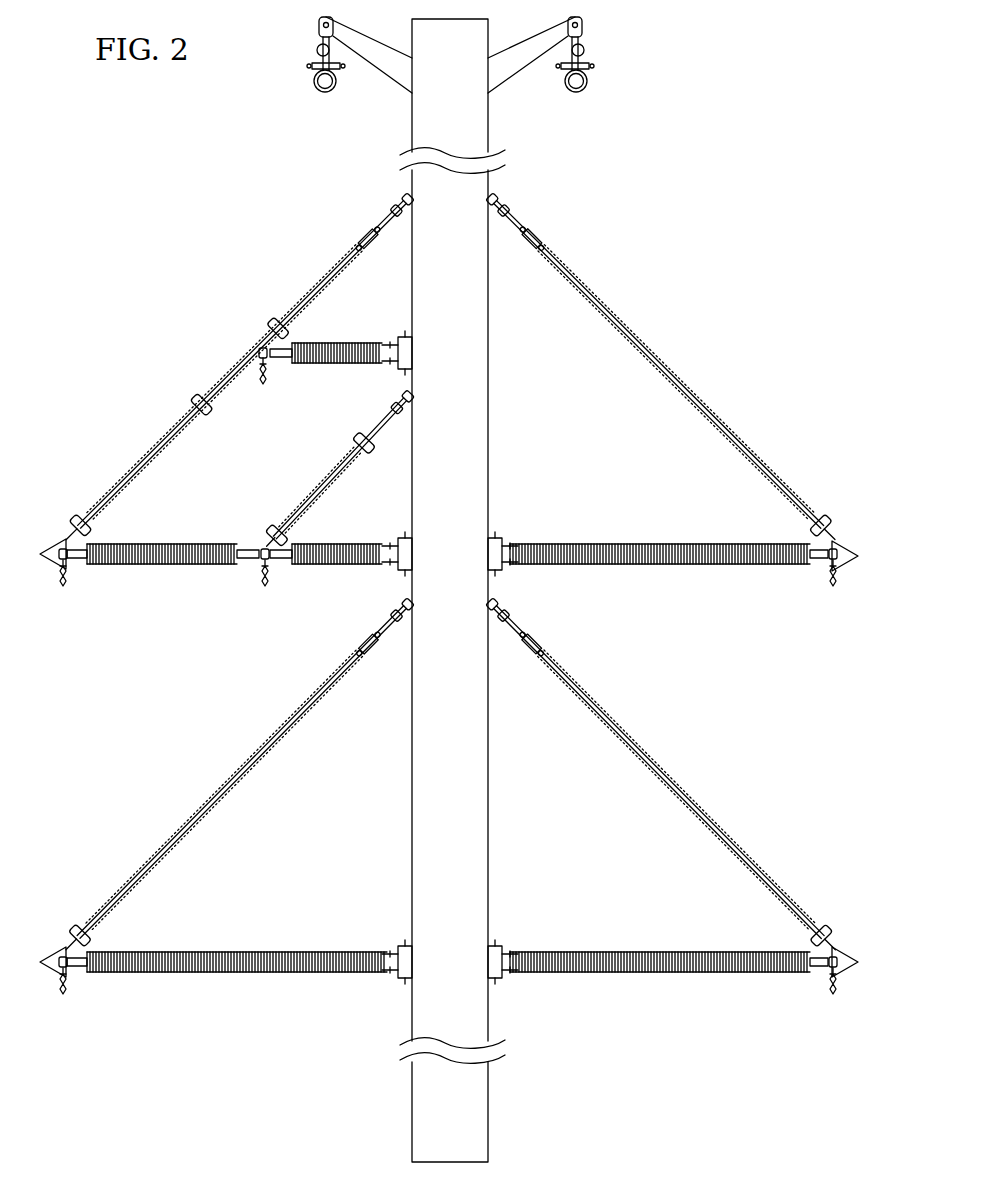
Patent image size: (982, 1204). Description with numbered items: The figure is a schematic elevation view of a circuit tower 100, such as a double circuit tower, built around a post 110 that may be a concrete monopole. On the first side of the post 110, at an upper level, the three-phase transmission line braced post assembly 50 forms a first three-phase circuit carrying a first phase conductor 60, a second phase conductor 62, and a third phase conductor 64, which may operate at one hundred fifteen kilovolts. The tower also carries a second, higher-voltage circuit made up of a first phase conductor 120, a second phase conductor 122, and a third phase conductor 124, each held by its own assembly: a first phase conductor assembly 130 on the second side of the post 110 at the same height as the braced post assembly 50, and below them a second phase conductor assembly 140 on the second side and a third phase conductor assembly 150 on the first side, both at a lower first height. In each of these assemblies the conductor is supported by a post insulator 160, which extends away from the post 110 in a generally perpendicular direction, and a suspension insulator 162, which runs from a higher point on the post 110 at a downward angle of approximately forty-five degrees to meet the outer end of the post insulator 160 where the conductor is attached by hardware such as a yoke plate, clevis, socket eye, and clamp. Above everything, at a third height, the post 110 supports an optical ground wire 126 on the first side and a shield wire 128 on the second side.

The three-phase transmission line braced post assembly 50 is at (166, 380).
The first phase conductor 60 is at (265, 383).
The second phase conductor 62 is at (265, 582).
The third phase conductor 64 is at (64, 584).
The circuit tower 100 is at (766, 408).
The post 110 is at (405, 1117).
The first phase conductor 120 is at (832, 588).
The second phase conductor 122 is at (832, 988).
The third phase conductor 124 is at (62, 988).
The optical ground wire (OPGW) 126 is at (327, 91).
The shield wire (SW) 128 is at (578, 93).
The first phase conductor assembly 130 is at (758, 634).
The second phase conductor assembly 140 is at (756, 1042).
The third phase conductor assembly 150 is at (142, 1038).
The post insulator 160 is at (594, 566).
The suspension insulator 162 is at (603, 303).